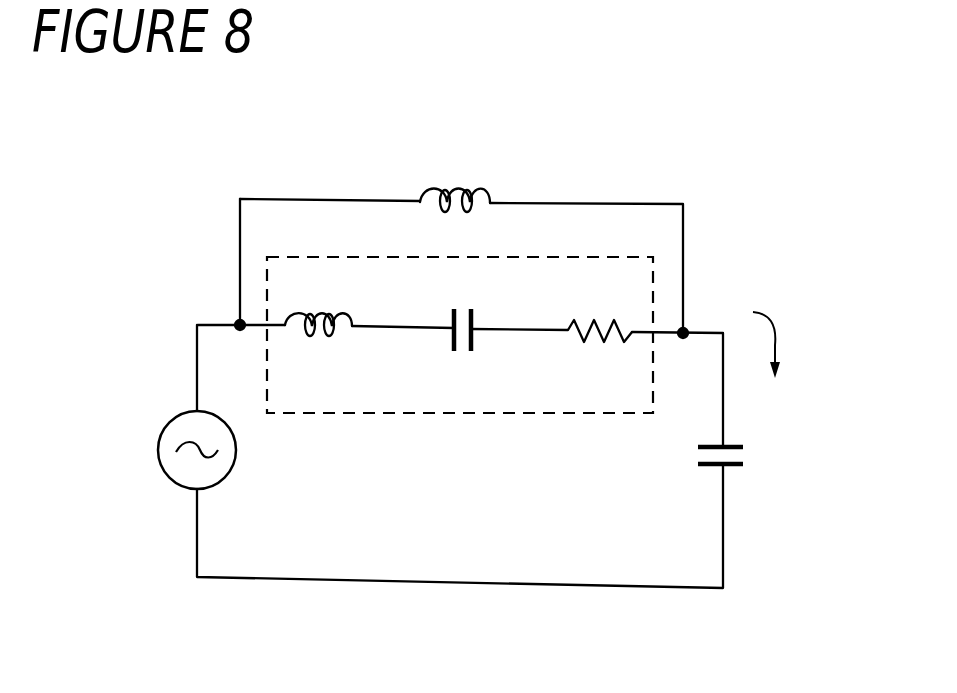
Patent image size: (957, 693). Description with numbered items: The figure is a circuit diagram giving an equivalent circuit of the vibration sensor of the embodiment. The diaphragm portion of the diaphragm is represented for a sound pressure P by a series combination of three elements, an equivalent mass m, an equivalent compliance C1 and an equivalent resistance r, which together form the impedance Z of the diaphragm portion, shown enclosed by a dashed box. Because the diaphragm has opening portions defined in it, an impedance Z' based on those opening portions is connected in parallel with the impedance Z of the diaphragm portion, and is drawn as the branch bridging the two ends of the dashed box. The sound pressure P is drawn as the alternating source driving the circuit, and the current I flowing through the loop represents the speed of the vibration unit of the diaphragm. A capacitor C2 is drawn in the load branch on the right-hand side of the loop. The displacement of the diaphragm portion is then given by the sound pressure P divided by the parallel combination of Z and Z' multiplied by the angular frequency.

The impedance based on the opening portions Z' is at (455, 165).
The impedance of the diaphragm portion Z is at (460, 369).
The equivalent mass (inductance) of the diaphragm portion m is at (318, 341).
The equivalent compliance (capacitance) of the diaphragm portion C1 is at (465, 349).
The equivalent resistance of the diaphragm portion r is at (600, 346).
The sound pressure P is at (181, 450).
The capacitor C2 is at (742, 463).
The speed of the vibration unit I is at (773, 345).